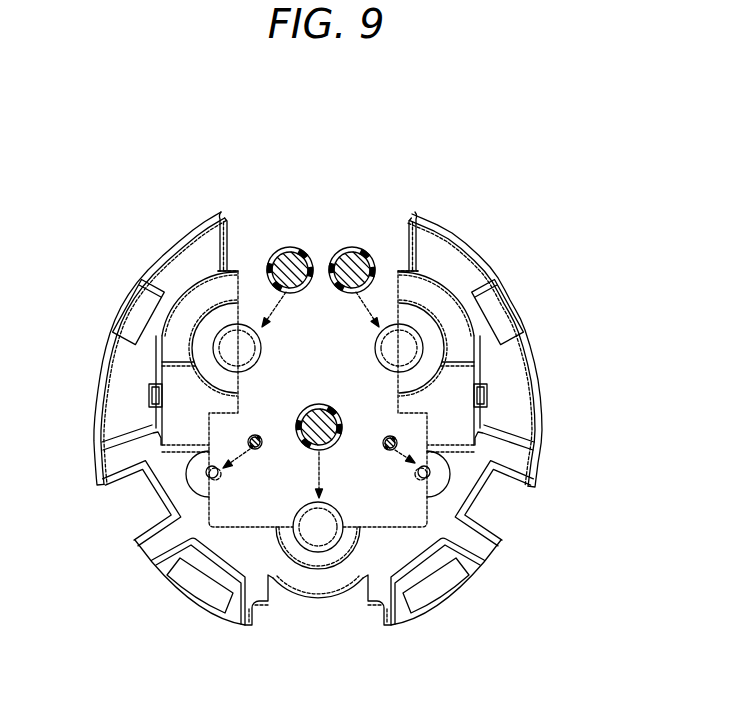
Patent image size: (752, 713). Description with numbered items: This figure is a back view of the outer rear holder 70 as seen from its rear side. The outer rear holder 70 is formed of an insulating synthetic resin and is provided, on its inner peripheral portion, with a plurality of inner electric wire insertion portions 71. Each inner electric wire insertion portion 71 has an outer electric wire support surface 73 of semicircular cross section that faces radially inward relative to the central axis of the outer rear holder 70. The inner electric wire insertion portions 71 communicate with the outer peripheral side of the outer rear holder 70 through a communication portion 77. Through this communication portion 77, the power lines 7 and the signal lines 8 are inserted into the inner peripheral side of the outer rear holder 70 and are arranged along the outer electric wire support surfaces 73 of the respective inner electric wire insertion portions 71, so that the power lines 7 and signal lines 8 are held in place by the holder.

The outer rear holder 70 is at (526, 302).
The inner electric wire insertion portion 71 is at (207, 347).
The outer electric wire support surface 73 is at (232, 345).
The communication portion 77 is at (410, 238).
The power line 7 is at (290, 247).
The signal line 8 is at (318, 403).